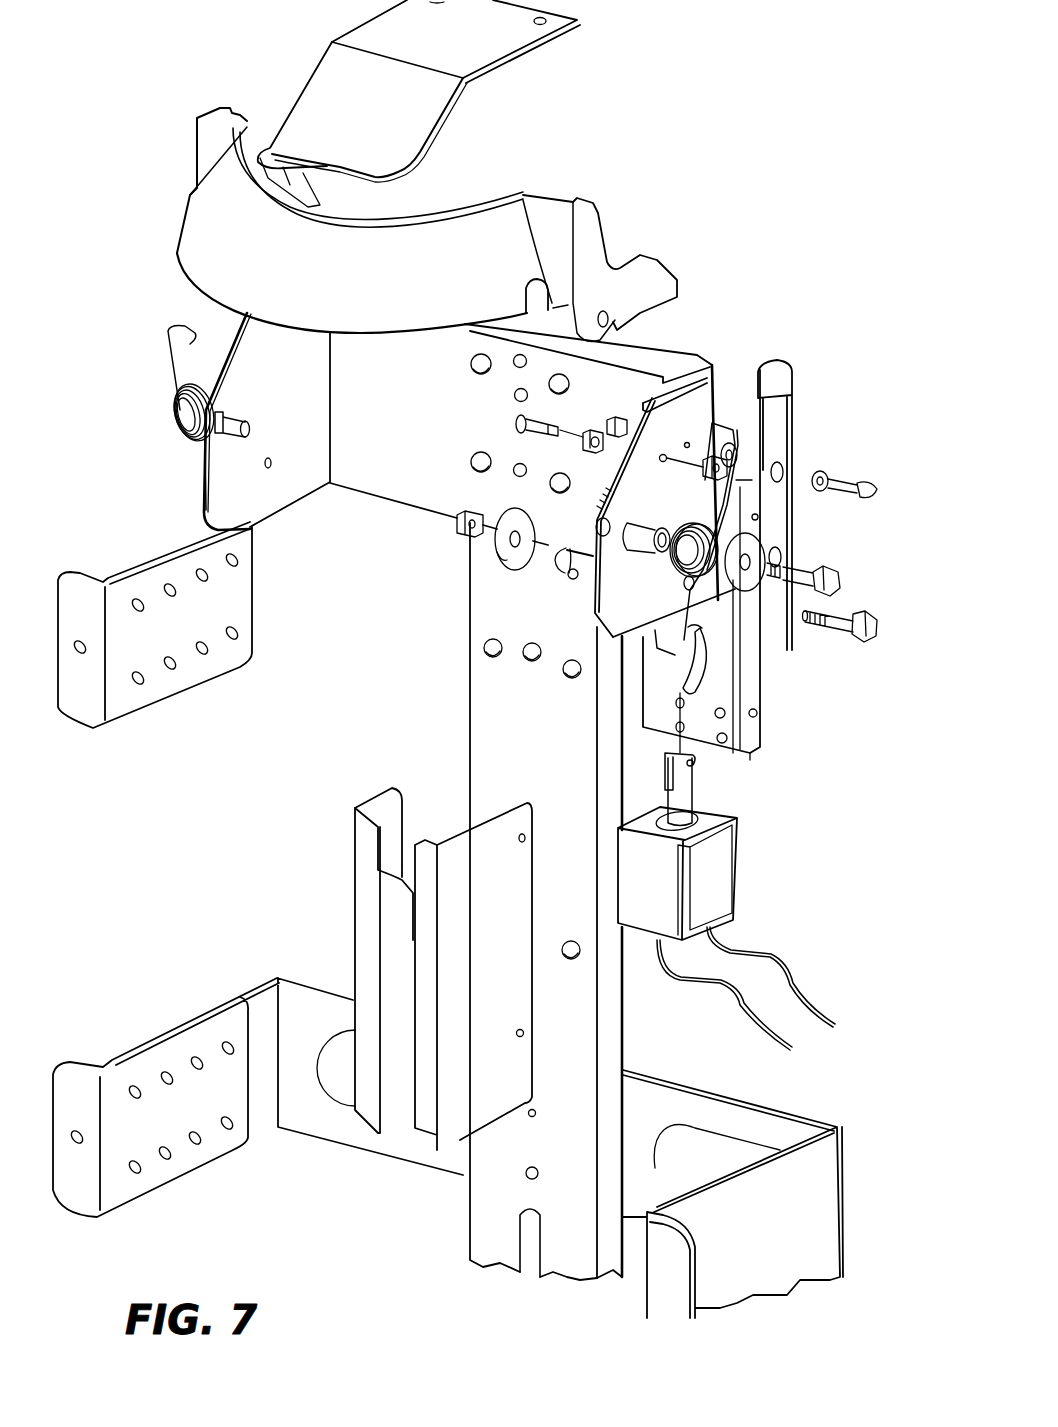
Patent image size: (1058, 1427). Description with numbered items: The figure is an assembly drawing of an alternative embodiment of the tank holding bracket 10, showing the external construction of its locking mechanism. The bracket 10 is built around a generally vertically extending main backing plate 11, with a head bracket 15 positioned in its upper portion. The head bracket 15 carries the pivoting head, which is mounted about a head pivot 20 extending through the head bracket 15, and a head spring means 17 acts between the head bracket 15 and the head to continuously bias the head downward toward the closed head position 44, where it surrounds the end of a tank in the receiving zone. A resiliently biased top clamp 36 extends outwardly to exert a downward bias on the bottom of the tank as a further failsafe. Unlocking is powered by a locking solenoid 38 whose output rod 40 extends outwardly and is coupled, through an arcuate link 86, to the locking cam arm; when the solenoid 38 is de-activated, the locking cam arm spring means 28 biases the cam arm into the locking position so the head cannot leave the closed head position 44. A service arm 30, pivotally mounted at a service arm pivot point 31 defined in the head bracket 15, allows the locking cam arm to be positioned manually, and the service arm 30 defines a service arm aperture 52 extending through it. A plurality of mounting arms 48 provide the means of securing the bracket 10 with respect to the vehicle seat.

The bracket 10 is at (657, 347).
The main backing plate 11 is at (545, 726).
The head bracket 15 is at (407, 420).
The head spring means 17 is at (170, 388).
The head pivot 20 is at (233, 433).
The locking cam arm spring means 28 is at (545, 570).
The service arm 30 is at (783, 420).
The service arm pivot point 31 is at (690, 437).
The resiliently biased top clamp 36 is at (330, 62).
The locking solenoid 38 is at (707, 857).
The output rod 40 is at (687, 797).
The closed head position 44 is at (462, 238).
The mounting arms 48 is at (177, 687).
The service arm aperture 52 is at (783, 560).
The arcuate link 86 is at (700, 663).